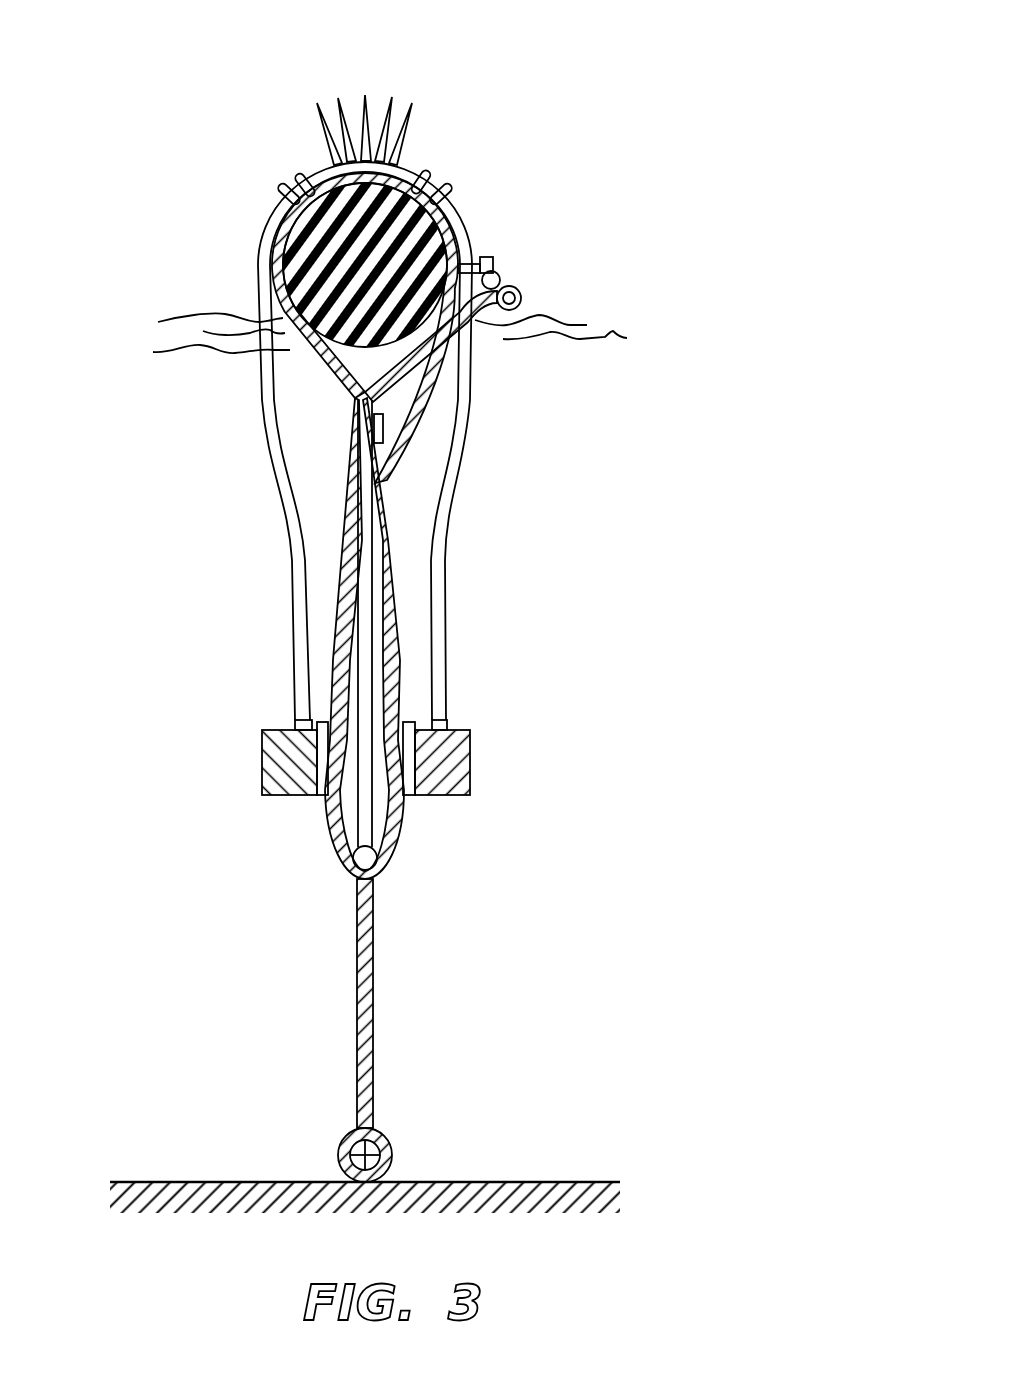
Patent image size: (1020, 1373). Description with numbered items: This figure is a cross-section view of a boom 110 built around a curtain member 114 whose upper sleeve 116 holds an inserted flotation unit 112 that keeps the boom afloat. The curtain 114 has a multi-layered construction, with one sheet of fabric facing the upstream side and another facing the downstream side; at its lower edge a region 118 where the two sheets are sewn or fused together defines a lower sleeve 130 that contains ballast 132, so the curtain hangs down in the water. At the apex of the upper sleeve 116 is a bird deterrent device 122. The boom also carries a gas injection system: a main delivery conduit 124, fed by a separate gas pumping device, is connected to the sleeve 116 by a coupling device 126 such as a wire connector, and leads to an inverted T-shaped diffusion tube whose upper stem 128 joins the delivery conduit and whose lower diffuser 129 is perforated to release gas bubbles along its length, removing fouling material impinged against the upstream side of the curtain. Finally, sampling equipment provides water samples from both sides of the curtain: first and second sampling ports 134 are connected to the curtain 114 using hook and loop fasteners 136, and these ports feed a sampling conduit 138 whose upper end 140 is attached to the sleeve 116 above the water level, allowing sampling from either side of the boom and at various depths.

The boom 110 is at (612, 145).
The flotation unit 112 is at (320, 262).
The curtain member 114 is at (392, 566).
The upper sleeve 116 is at (407, 167).
The region 118 is at (373, 1031).
The bird deterrent device 122 is at (405, 97).
The main delivery conduit 124 is at (523, 295).
The coupling device 126 is at (498, 277).
The upper stem 128 is at (364, 670).
The lower diffuser 129 is at (368, 858).
The lower sleeve 130 is at (380, 1158).
The ballast 132 is at (357, 1156).
The sampling port 134 is at (280, 754).
The hook and loop fastener 136 is at (322, 792).
The sampling conduit 138 is at (280, 468).
The upper end 140 is at (287, 196).